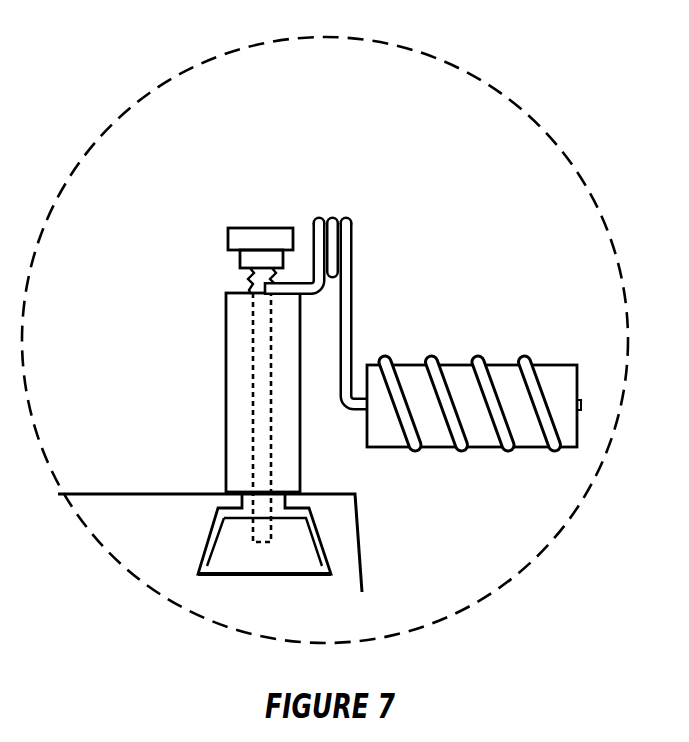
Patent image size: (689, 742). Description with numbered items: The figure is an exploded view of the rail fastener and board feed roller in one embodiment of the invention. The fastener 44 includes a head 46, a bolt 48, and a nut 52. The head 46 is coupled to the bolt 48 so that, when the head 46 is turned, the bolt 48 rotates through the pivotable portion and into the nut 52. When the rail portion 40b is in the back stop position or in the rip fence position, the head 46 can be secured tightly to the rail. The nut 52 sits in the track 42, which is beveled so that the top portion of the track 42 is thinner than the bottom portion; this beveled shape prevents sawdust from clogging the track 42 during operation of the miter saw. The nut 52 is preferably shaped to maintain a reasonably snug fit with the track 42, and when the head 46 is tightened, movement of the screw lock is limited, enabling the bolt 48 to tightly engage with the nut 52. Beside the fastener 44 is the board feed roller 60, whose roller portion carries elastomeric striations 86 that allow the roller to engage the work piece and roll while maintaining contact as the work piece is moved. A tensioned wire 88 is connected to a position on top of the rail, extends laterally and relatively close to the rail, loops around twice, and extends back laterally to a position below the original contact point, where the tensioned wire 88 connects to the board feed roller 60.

The rail portion 40b is at (230, 472).
The track 42 is at (287, 553).
The fastener 44 is at (350, 212).
The head 46 is at (245, 242).
The bolt 48 is at (248, 333).
The nut 52 is at (207, 548).
The board feed roller 60 is at (478, 443).
The elastomeric striations 86 is at (480, 358).
The tensioned wire 88 is at (317, 213).